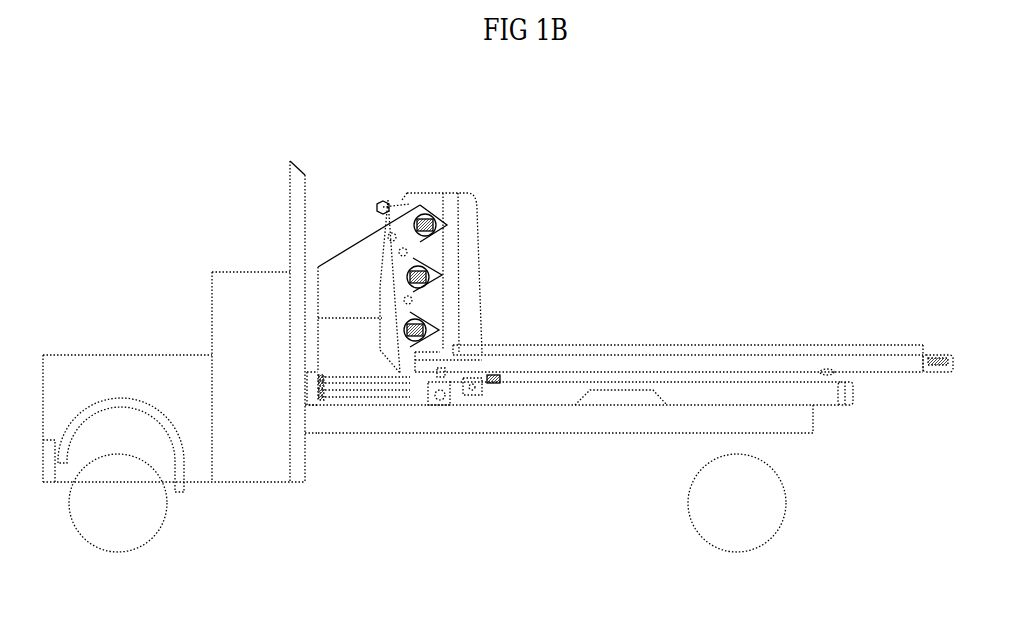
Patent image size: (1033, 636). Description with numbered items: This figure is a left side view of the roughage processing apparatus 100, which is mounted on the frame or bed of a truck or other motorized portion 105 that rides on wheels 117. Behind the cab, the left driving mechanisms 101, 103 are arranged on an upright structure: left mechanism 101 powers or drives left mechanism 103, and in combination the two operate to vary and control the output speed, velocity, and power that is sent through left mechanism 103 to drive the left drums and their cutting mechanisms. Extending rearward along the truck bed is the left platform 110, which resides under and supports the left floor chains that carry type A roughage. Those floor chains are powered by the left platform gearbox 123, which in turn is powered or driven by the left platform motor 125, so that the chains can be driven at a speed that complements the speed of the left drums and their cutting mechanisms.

The roughage processing apparatus 100 is at (872, 608).
The left driving mechanism 101 is at (381, 200).
The left driving mechanism 103 is at (438, 333).
The truck 105 is at (83, 350).
The left platform 110 is at (920, 373).
The wheels 117 is at (84, 538).
The left platform gearbox 123 is at (467, 392).
The left platform motor 125 is at (502, 392).